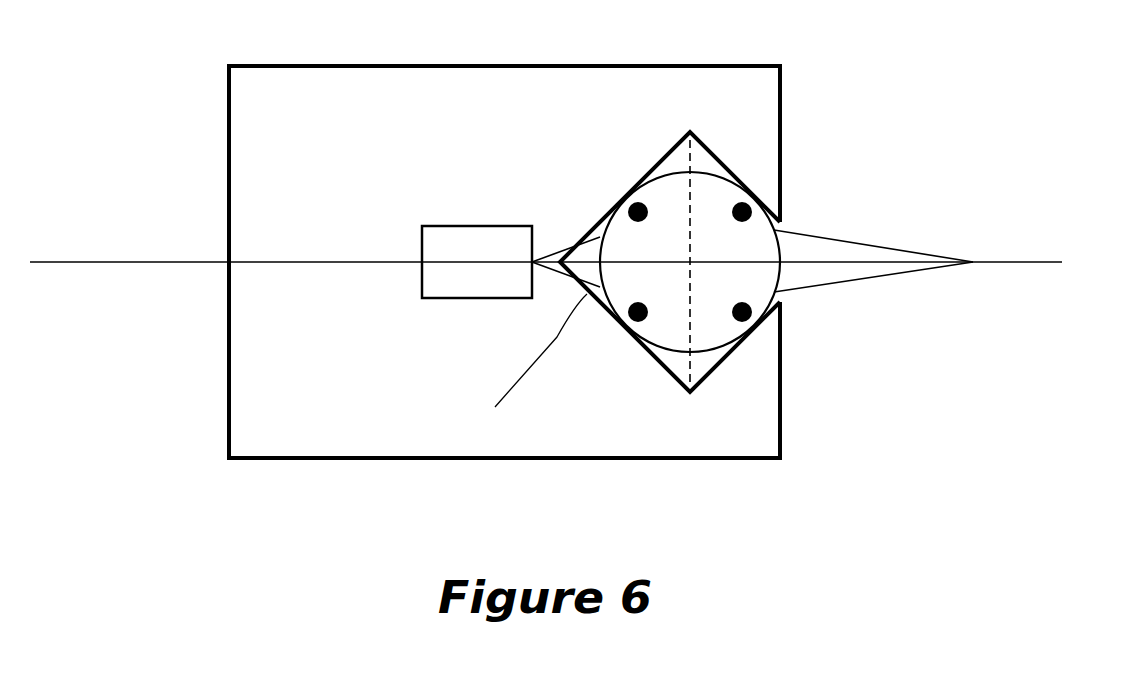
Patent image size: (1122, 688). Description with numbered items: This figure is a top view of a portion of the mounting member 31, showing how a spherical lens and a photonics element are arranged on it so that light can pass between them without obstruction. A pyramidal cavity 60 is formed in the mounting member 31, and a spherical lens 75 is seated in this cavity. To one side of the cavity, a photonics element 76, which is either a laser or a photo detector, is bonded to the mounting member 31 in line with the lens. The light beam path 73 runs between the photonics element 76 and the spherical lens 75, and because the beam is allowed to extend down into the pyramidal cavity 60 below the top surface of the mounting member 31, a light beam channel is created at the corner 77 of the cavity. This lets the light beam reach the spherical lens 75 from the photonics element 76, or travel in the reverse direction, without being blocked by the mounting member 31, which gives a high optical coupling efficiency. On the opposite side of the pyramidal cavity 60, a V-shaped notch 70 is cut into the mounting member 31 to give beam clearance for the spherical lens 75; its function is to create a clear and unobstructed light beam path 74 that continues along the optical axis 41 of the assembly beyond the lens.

The mounting member 31 is at (471, 65).
The optical axis 41 is at (1028, 261).
The pyramidal cavity 60 is at (672, 151).
The V-shaped notch 70 is at (792, 250).
The light beam path 73 is at (558, 252).
The light beam path 74 is at (877, 244).
The spherical lens 75 is at (708, 351).
The photonics element 76 is at (442, 226).
The corner 77 is at (527, 370).